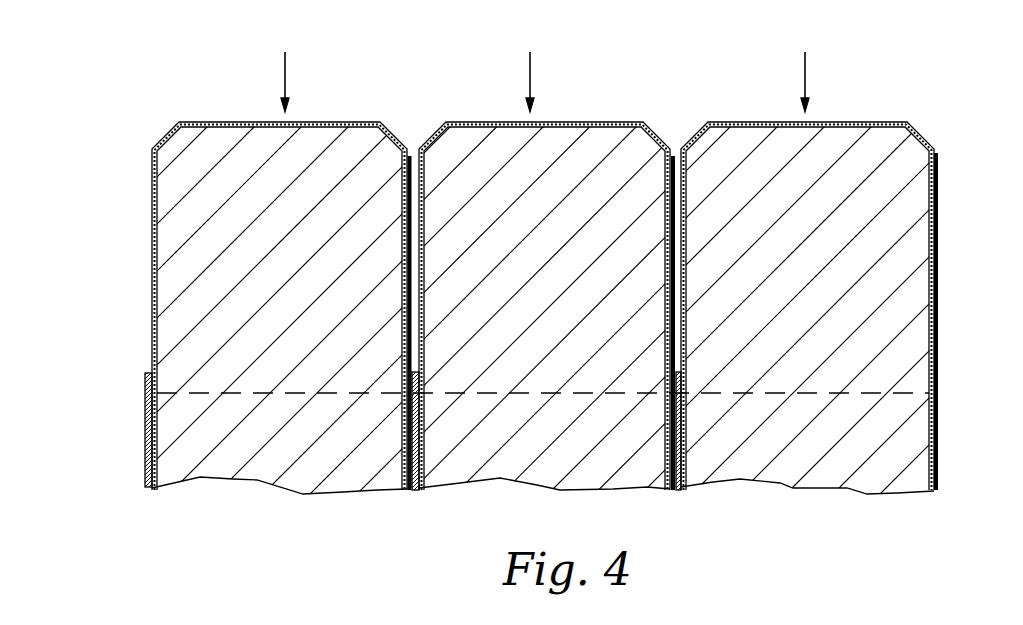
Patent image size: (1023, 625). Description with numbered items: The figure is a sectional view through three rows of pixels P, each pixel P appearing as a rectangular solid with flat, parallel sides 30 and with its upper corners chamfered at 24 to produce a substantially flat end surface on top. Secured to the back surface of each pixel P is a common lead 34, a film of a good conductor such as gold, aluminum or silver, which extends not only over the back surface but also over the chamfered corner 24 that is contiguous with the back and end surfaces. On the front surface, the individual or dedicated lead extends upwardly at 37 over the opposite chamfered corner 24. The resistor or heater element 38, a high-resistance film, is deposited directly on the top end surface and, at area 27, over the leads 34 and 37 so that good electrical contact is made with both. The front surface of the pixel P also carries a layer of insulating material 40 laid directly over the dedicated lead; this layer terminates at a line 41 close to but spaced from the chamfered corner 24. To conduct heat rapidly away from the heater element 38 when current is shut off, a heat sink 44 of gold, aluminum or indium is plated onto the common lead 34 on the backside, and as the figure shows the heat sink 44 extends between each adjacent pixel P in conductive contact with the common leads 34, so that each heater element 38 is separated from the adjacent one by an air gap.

The chamfered corner 24 is at (168, 138).
The area 27 is at (160, 144).
The sides 30 is at (302, 300).
The common lead 34 is at (178, 138).
The upward extension of dedicated lead 37 is at (382, 137).
The resistor or heater element 38 is at (327, 123).
The layer of insulating material 40 is at (411, 177).
The line 41 is at (937, 157).
The heat sink 44 is at (145, 432).
The pixel P is at (544, 66).